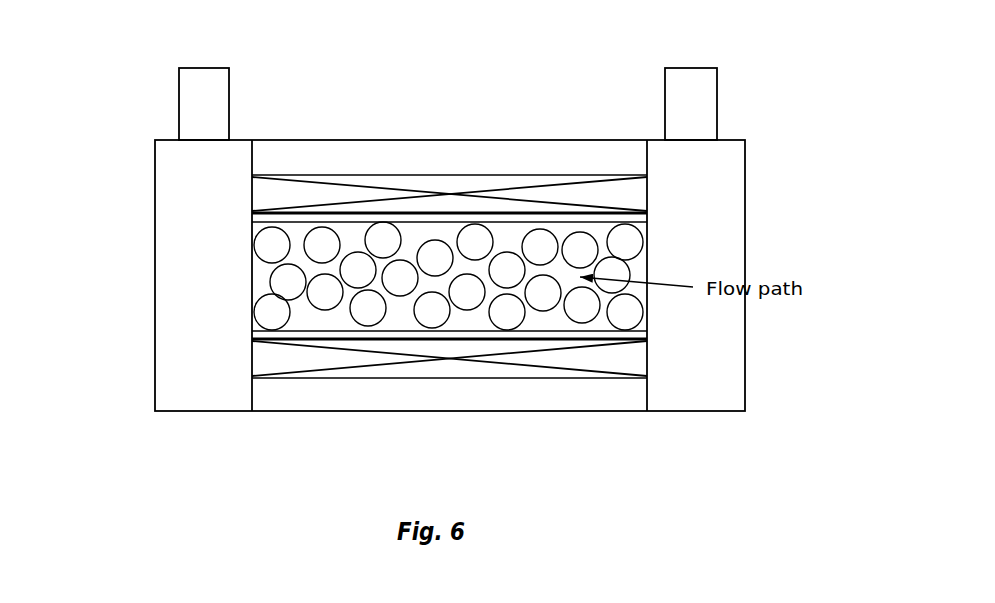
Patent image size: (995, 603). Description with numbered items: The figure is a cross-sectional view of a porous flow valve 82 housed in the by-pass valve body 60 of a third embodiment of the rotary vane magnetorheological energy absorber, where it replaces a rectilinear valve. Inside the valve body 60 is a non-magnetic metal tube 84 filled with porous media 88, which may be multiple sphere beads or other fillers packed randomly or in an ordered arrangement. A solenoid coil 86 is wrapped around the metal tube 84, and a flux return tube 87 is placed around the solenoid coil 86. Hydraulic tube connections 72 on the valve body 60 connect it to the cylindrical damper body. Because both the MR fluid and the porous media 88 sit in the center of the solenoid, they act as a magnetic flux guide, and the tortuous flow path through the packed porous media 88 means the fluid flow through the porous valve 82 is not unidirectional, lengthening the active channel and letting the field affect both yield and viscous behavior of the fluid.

The by-pass valve body 60 is at (180, 415).
The valve-to-body hydraulic tube connections 72 is at (232, 70).
The porous flow valve 82 is at (335, 382).
The non-magnetic metal tube 84 is at (403, 220).
The solenoid coil 86 is at (270, 200).
The flux return tube 87 is at (408, 395).
The porous media 88 is at (580, 300).